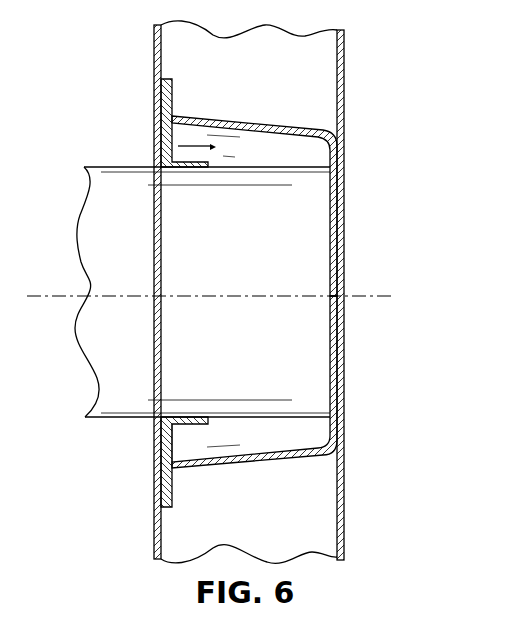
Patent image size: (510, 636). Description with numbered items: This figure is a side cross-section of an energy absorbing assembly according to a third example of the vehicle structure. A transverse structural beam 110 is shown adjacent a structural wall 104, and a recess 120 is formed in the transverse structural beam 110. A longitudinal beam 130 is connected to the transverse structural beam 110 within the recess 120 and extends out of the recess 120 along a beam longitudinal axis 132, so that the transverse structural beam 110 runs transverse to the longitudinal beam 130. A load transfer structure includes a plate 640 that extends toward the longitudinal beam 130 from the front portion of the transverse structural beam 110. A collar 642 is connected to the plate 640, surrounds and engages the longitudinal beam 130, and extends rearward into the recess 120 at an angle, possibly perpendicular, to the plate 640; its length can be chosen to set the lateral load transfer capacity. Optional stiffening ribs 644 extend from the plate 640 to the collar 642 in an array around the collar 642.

The transverse structural beam 110 is at (154, 70).
The structural wall 104 is at (344, 65).
The recess 120 is at (192, 162).
The longitudinal beam 130 is at (100, 167).
The beam longitudinal axis 132 is at (37, 295).
The plate 640 is at (158, 491).
The collar 642 is at (170, 462).
The stiffening ribs 644 is at (170, 432).